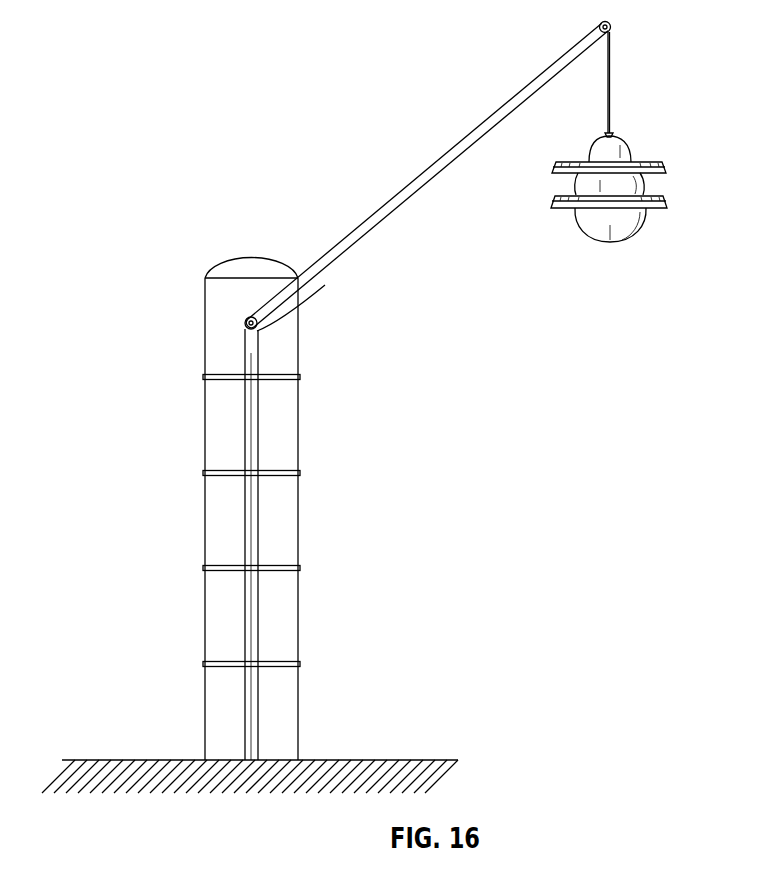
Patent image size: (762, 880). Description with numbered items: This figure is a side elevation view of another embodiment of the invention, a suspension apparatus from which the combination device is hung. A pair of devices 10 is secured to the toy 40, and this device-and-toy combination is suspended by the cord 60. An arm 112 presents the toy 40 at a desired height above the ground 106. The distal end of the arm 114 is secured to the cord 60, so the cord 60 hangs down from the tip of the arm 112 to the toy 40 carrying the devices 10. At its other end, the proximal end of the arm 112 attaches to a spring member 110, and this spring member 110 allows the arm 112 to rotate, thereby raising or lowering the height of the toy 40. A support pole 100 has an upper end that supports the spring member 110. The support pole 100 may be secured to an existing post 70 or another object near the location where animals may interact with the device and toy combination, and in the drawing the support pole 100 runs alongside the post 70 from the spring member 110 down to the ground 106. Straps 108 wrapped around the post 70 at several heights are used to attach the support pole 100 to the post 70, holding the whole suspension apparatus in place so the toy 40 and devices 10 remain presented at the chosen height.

The device 10 is at (676, 168).
The toy 40 is at (566, 232).
The cord 60 is at (611, 75).
The post 70 is at (218, 312).
The support pole 100 is at (259, 520).
The ground 106 is at (378, 758).
The straps 108 is at (287, 375).
The spring member 110 is at (306, 298).
The arm 112 is at (447, 153).
The distal end of the arm 114 is at (611, 29).